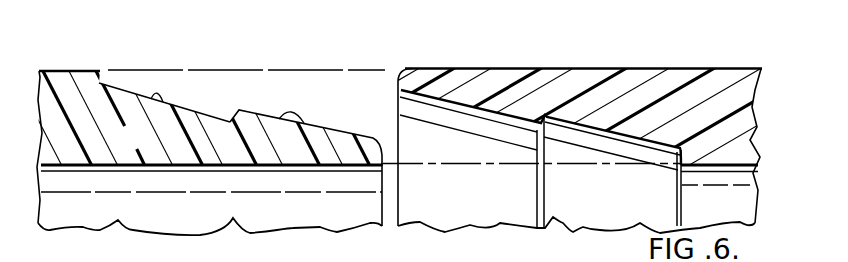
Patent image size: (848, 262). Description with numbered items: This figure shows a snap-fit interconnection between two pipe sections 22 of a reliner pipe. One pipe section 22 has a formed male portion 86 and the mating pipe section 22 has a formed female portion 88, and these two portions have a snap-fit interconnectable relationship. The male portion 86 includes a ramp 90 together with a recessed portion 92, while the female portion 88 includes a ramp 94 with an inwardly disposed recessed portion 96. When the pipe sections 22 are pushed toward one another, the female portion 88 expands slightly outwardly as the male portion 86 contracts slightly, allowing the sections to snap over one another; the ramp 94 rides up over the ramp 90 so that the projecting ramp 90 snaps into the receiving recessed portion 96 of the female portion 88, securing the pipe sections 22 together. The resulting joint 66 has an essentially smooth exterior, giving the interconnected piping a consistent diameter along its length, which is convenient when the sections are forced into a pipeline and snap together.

The pipe sections 22 is at (73, 73).
The joint 66 is at (347, 259).
The male portion 86 is at (228, 64).
The female portion 88 is at (486, 58).
The ramp 90 is at (286, 121).
The recessed portion 92 is at (155, 101).
The ramp 94 is at (451, 103).
The recessed portion 96 is at (610, 133).